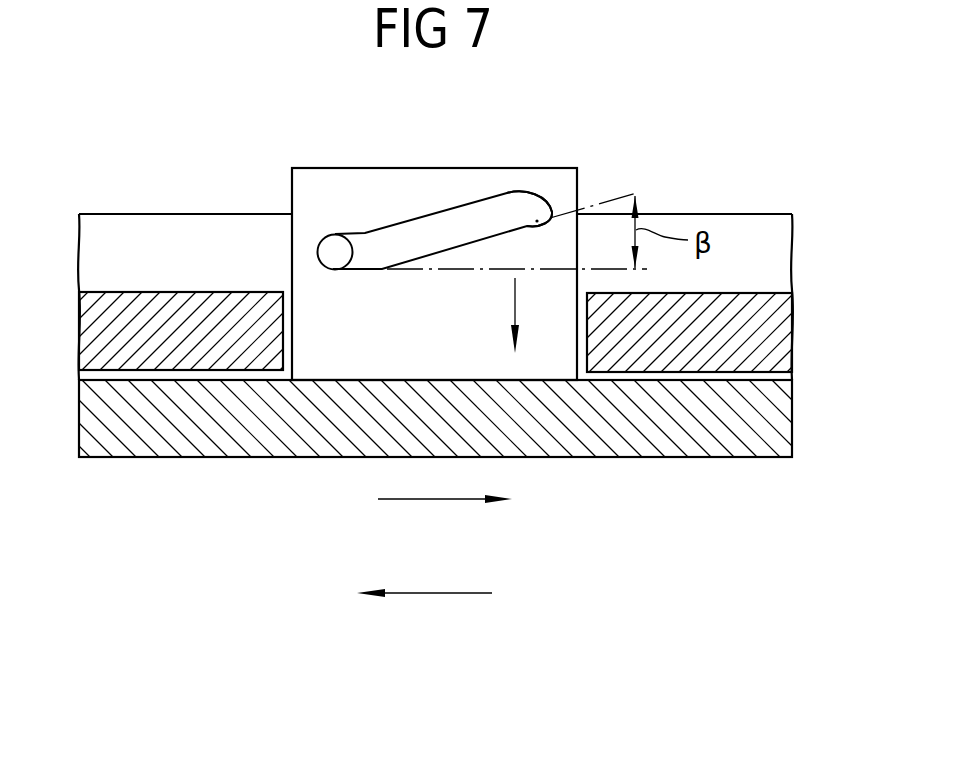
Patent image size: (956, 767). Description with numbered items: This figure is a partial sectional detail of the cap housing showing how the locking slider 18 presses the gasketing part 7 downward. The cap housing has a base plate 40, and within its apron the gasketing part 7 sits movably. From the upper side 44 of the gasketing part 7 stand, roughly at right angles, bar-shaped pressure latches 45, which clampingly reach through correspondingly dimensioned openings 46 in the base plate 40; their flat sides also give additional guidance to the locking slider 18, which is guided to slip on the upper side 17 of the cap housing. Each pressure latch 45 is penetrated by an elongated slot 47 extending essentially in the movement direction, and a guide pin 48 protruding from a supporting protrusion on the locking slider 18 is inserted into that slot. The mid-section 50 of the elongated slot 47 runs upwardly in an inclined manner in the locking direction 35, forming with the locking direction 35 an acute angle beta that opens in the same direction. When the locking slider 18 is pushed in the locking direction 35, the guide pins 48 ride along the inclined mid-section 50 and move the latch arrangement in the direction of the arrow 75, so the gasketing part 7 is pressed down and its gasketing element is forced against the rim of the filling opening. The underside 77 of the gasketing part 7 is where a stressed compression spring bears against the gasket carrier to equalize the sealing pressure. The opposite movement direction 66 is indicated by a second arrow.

The gasketing part 7 is at (670, 437).
The upper side of the cap housing 17 is at (757, 292).
The locking slider 18 is at (740, 232).
The locking direction 35 is at (447, 499).
The base plate 40 is at (777, 327).
The upper side of the gasketing part 44 is at (107, 378).
The pressure latches 45 is at (363, 167).
The openings 46 is at (283, 320).
The elongated slots 47 is at (513, 212).
The guide pins 48 is at (335, 252).
The mid-section of the elongated slots 50 is at (427, 230).
The opposite direction of movement 66 is at (448, 593).
The arrow 75 is at (514, 307).
The underside of the gasketing part 77 is at (140, 457).